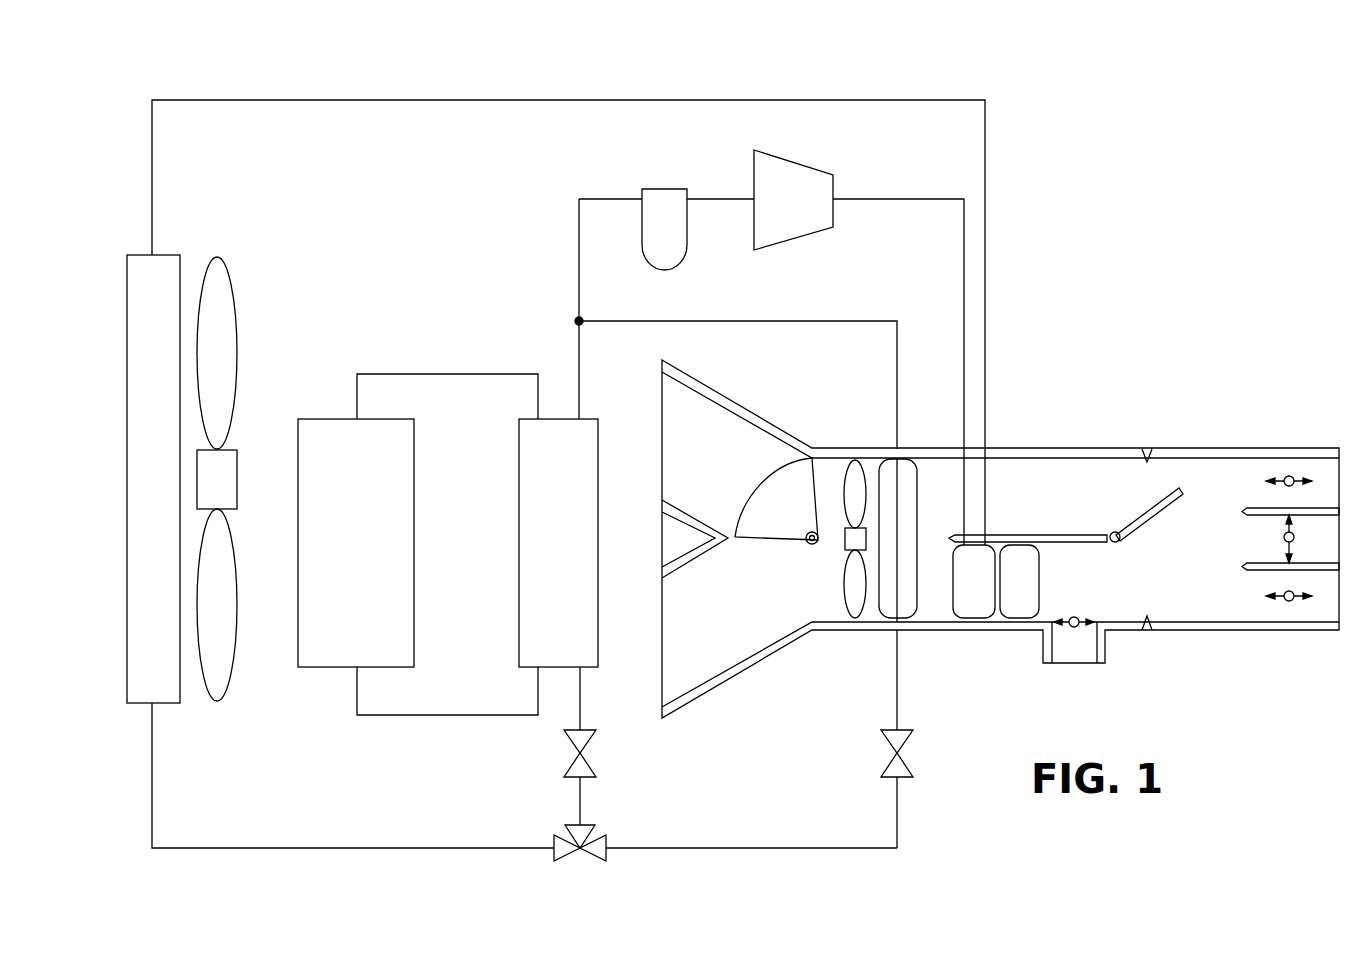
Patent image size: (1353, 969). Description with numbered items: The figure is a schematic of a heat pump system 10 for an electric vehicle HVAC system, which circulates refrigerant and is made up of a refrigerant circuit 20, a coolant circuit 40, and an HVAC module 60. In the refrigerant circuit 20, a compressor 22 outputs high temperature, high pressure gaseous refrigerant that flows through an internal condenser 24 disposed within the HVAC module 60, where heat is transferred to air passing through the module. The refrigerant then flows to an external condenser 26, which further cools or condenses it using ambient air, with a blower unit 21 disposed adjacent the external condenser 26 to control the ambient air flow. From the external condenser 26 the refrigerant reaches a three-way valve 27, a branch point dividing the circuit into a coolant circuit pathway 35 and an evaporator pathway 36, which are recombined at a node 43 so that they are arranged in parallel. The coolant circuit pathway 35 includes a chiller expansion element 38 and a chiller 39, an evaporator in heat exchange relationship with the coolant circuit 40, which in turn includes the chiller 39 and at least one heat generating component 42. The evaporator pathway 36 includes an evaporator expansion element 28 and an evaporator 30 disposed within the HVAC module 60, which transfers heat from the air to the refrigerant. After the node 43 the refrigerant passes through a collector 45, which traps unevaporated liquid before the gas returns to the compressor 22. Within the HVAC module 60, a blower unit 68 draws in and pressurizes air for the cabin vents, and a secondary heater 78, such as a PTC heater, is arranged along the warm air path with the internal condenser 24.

The heat pump system 10 is at (1078, 361).
The refrigerant circuit 20 is at (553, 97).
The blower unit 21 is at (238, 478).
The compressor 22 is at (779, 211).
The internal condenser 24 is at (964, 594).
The external condenser 26 is at (141, 485).
The three-way valve 27 is at (581, 850).
The evaporator expansion element 28 is at (899, 752).
The evaporator 30 is at (886, 547).
The coolant circuit pathway 35 is at (578, 803).
The evaporator pathway 36 is at (896, 804).
The chiller expansion element 38 is at (582, 753).
The chiller 39 is at (546, 547).
The coolant circuit 40 is at (445, 365).
The heat generating component 42 is at (344, 547).
The node 43 is at (570, 321).
The collector 45 is at (654, 233).
The HVAC module 60 is at (1203, 440).
The blower unit 68 is at (843, 545).
The secondary heater 78 is at (1009, 594).